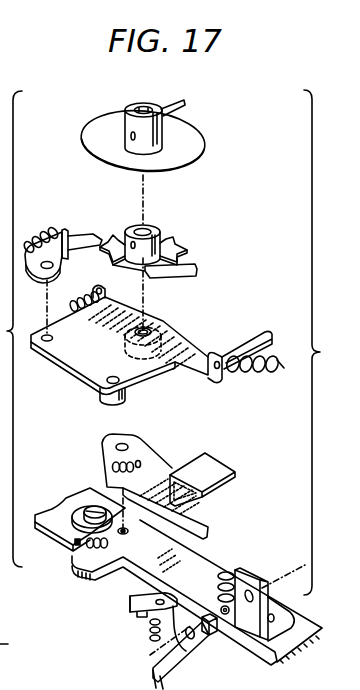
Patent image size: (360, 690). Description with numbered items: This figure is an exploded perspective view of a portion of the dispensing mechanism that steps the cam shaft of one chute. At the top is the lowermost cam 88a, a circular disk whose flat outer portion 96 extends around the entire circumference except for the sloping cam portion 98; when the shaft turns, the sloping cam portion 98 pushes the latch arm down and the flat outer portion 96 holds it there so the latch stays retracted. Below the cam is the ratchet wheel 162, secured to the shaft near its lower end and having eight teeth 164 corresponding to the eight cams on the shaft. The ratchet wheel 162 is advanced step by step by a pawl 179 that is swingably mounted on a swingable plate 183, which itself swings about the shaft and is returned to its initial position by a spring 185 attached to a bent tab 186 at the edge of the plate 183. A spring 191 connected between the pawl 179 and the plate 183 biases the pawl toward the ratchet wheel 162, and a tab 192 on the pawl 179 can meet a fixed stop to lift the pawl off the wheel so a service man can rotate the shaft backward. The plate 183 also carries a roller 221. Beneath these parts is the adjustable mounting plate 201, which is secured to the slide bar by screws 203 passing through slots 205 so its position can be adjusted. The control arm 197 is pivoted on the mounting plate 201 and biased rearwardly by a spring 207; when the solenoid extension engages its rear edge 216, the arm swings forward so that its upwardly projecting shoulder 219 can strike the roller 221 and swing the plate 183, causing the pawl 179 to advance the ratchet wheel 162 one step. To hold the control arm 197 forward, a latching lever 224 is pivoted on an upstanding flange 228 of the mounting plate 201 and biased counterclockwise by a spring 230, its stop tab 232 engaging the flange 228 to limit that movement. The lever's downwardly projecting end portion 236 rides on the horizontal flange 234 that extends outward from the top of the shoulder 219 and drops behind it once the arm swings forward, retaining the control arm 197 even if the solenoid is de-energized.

The sloping cam portion 98 is at (185, 101).
The lowermost cam 88a is at (215, 161).
The flat outer portion 96 is at (180, 172).
The spring 191 is at (47, 226).
The tab or flange 192 is at (69, 226).
The pawl 179 is at (90, 233).
The ratchet wheel 162 is at (185, 242).
The teeth 164 is at (142, 279).
The bracket 186 is at (262, 330).
The swingable plate 183 is at (68, 368).
The roller 221 is at (136, 390).
The spring 185 is at (252, 376).
The control arm 197 is at (160, 460).
The spring 207 is at (116, 462).
The horizontal flange 234 is at (232, 471).
The screws 203 is at (95, 507).
The upwardly projecting flange or shoulder 219 is at (188, 497).
The rear edge 216 is at (150, 508).
The slots 205 is at (70, 534).
The spring 230 is at (232, 560).
The upstanding flange 228 is at (243, 571).
The latching lever 224 is at (163, 594).
The adjustable mounting plate 201 is at (280, 612).
The downwardly projecting end portion 236 is at (138, 606).
The stop tab 232 is at (208, 643).